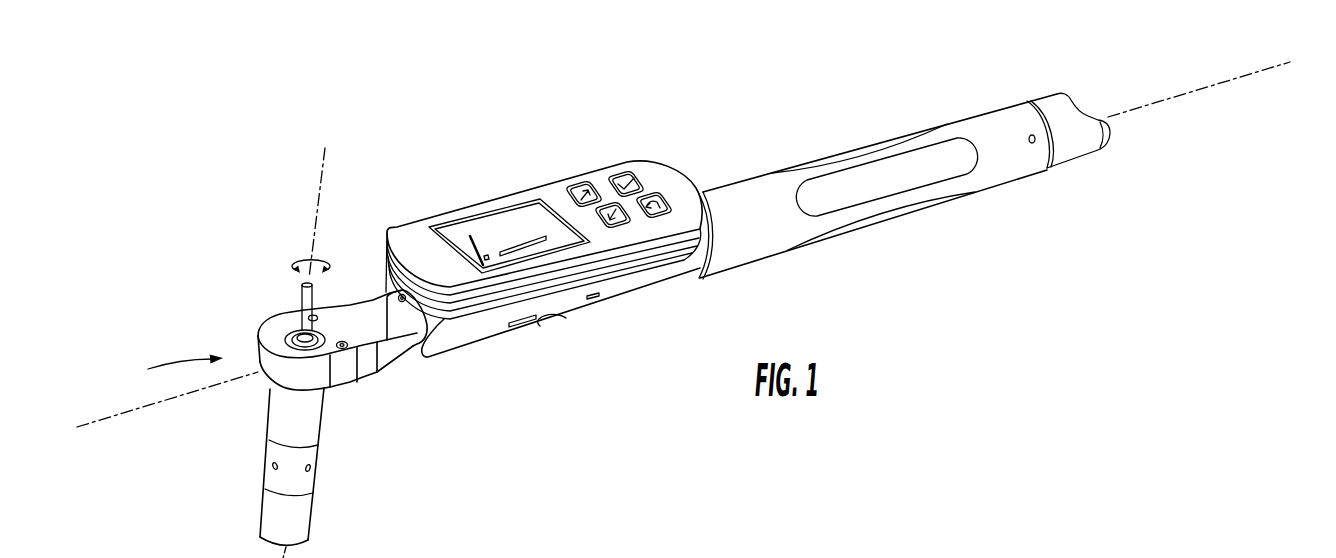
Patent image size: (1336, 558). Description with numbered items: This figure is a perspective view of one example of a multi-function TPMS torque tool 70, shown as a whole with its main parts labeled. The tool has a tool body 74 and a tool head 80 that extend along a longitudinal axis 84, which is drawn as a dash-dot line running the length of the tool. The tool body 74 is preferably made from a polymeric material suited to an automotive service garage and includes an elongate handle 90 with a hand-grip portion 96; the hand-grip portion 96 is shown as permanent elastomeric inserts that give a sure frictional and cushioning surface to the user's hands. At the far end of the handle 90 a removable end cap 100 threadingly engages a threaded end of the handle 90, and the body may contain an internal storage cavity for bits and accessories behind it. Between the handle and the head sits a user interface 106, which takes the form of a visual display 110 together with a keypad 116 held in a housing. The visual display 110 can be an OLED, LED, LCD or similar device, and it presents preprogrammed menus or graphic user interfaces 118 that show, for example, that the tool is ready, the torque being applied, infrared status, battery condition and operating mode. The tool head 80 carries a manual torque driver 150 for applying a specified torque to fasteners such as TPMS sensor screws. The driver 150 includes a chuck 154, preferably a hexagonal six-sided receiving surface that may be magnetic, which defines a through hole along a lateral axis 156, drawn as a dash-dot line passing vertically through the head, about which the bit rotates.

The torque tool 70 is at (202, 164).
The tool body 74 is at (739, 117).
The tool head 80 is at (172, 369).
The longitudinal axis 84 is at (1181, 92).
The elongate handle 90 is at (848, 148).
The hand-grip portion 96 is at (896, 190).
The removable end cap 100 is at (1110, 134).
The user interface 106 is at (407, 193).
The visual display 110 is at (492, 212).
The keypad 116 is at (631, 153).
The graphic user interfaces 118 is at (523, 222).
The manual torque driver 150 is at (368, 393).
The chuck 154 is at (284, 326).
The lateral axis 156 is at (318, 192).